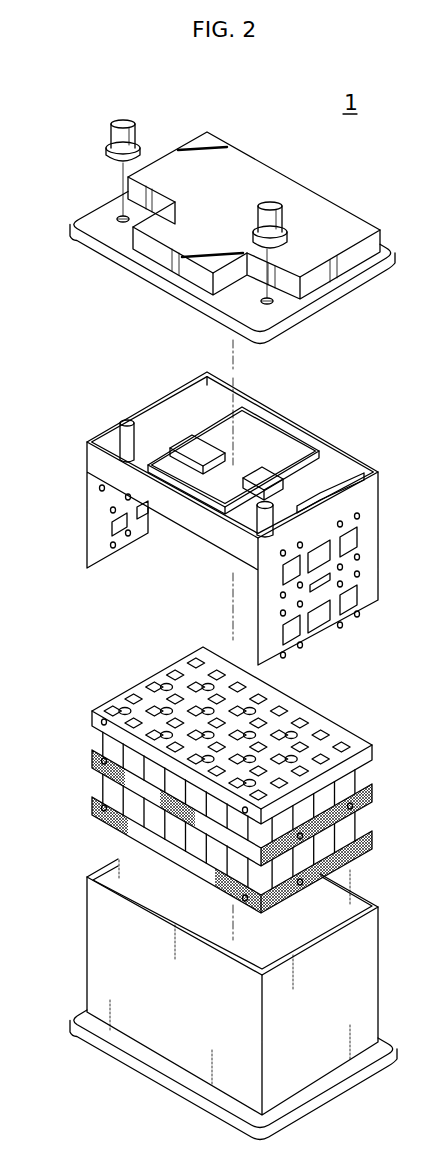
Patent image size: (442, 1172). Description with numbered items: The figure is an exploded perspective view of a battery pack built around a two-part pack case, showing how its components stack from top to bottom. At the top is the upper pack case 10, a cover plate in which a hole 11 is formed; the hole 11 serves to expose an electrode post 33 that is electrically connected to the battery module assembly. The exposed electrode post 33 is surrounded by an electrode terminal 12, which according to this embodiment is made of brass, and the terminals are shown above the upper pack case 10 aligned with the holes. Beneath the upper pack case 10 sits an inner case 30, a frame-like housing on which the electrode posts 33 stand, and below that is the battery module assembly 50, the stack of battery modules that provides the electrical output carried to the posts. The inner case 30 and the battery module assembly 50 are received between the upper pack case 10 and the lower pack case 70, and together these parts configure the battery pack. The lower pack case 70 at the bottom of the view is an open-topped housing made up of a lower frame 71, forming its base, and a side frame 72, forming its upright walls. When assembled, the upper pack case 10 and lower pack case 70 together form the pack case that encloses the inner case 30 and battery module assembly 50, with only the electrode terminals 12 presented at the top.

The upper pack case 10 is at (226, 207).
The hole 11 is at (117, 217).
The electrode terminal 12 is at (121, 123).
The inner case 30 is at (247, 518).
The electrode post 33 is at (128, 420).
The battery module assembly 50 is at (342, 718).
The lower pack case 70 is at (224, 999).
The lower frame 71 is at (84, 1037).
The side frame 72 is at (87, 957).